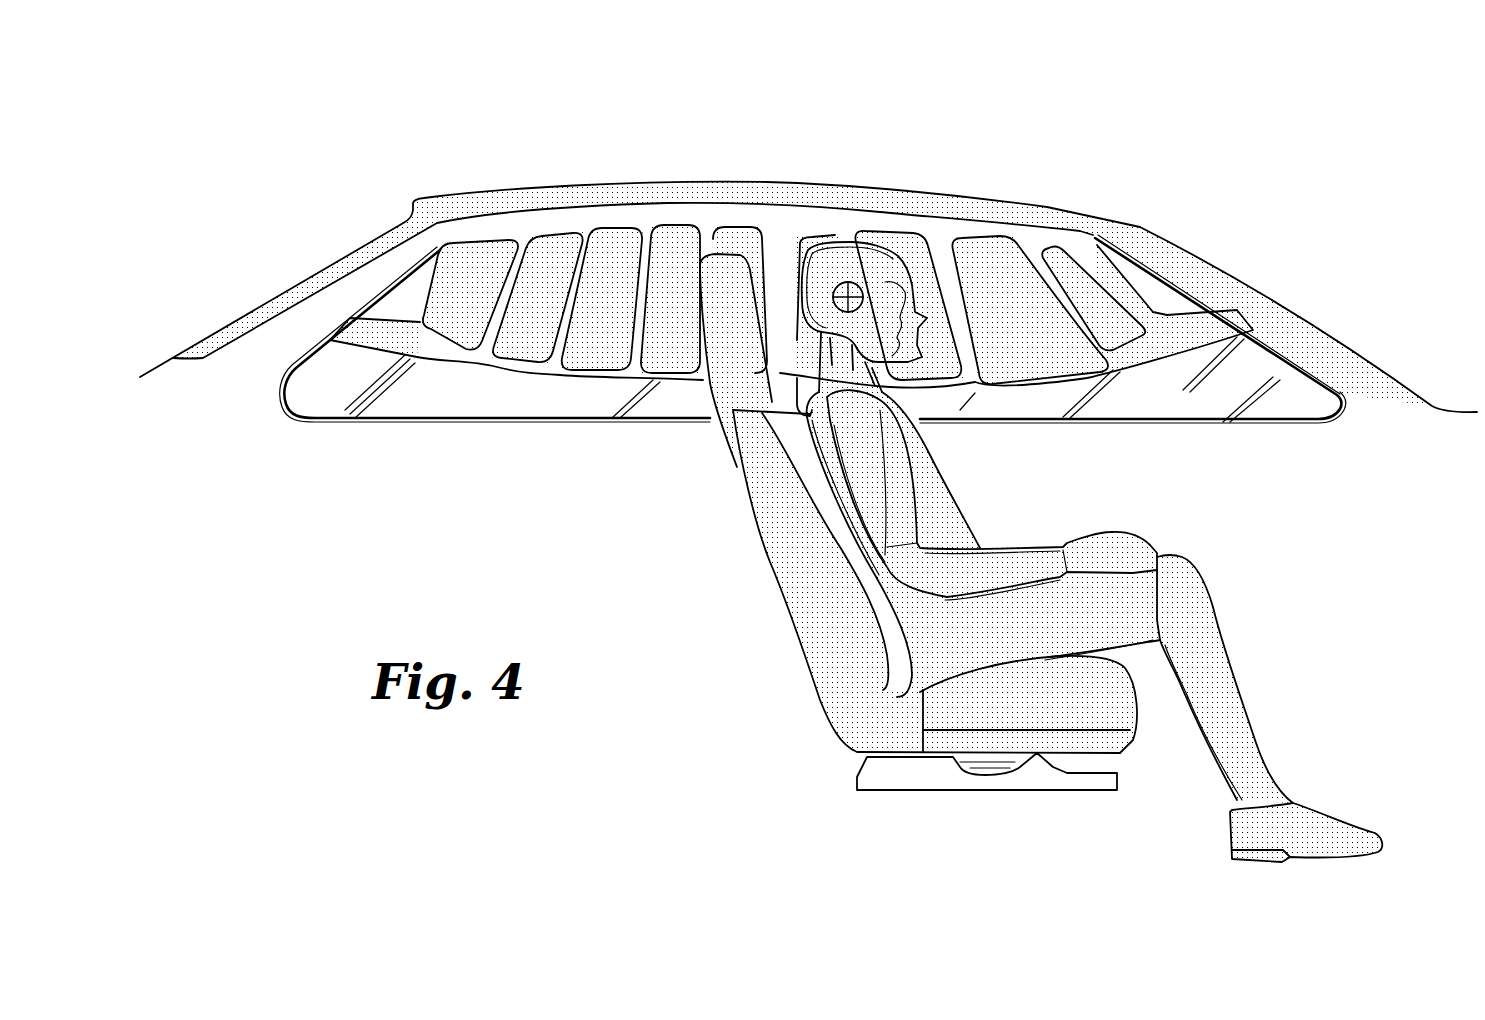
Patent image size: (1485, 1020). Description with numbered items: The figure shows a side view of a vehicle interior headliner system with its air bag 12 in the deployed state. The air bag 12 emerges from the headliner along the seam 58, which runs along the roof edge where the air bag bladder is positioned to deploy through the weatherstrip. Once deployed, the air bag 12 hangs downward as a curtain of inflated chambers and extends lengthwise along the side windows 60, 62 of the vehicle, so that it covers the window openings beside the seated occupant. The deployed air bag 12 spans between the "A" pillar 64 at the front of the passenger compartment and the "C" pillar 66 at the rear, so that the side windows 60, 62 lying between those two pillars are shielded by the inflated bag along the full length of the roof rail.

The air bag 12 is at (950, 257).
The seam 58 is at (835, 207).
The side window 60 is at (340, 370).
The side window 62 is at (1257, 363).
The "A" pillar 64 is at (1197, 283).
The "C" pillar 66 is at (397, 260).